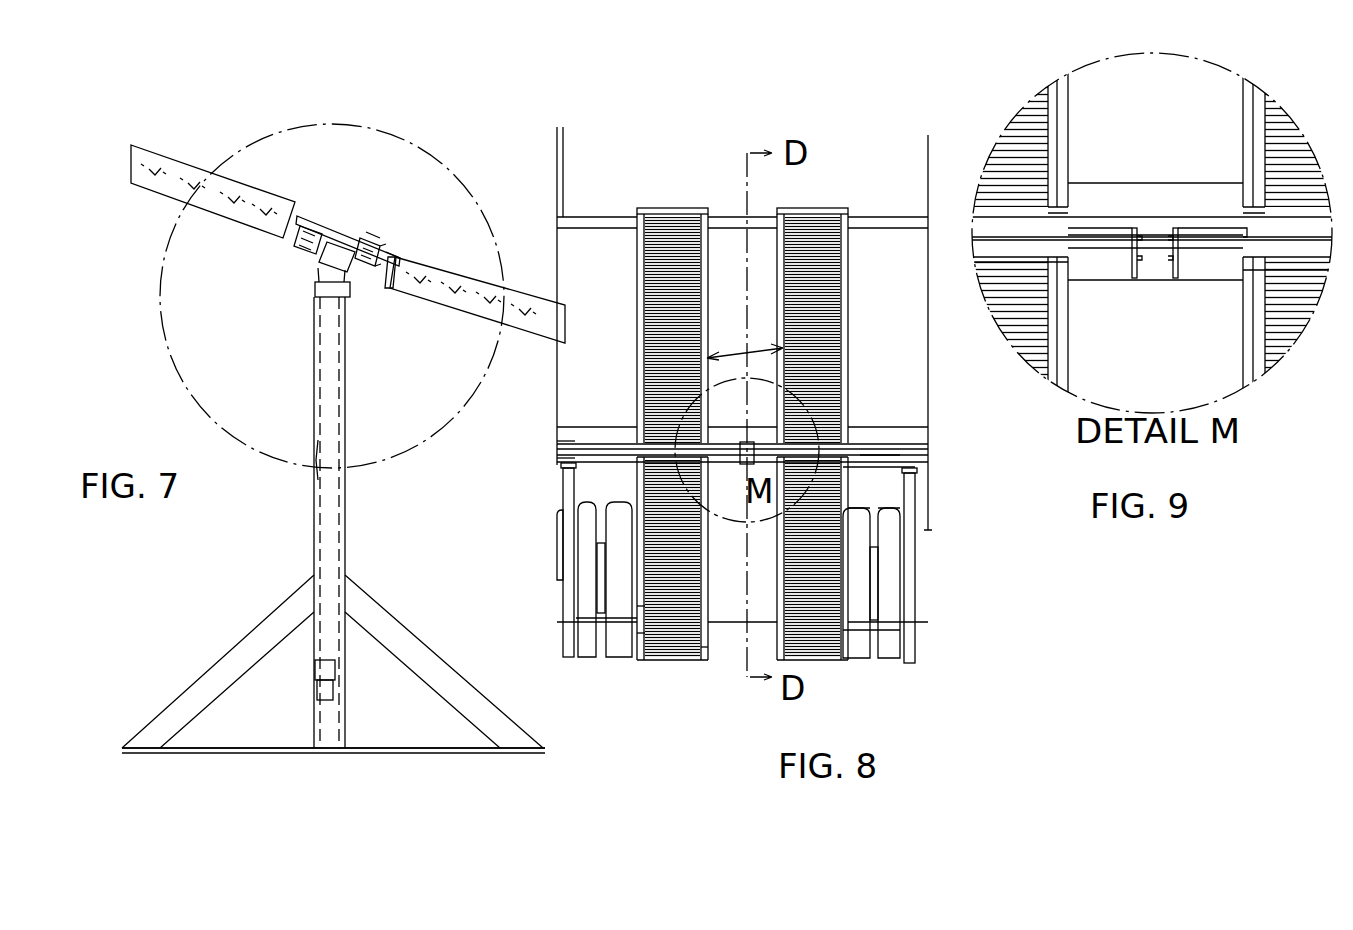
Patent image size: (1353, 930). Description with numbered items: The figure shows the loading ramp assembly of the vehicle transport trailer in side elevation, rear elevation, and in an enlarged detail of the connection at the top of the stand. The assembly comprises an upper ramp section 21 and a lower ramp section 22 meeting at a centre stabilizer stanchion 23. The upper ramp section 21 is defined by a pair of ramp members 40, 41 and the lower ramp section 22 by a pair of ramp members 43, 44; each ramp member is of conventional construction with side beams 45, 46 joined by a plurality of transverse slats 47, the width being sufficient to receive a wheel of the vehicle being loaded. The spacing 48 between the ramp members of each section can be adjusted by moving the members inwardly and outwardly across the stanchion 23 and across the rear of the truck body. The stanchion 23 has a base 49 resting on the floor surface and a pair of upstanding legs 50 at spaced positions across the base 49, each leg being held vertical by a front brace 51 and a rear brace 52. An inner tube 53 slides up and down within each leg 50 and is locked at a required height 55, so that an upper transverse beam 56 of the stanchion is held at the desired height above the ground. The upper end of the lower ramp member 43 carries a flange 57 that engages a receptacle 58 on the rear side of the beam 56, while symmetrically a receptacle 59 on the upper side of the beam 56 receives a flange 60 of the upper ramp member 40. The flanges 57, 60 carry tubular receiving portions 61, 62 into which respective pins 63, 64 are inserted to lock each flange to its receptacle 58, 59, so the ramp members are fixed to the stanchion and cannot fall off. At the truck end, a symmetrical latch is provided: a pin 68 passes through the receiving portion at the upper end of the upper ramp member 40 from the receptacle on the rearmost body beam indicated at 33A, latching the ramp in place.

In FIG. 8, the upper ramp section 21 is at (856, 357).
In FIG. 8, the lower ramp section 22 is at (852, 573).
In FIG. 7, the centre stabilizer stanchion 23 is at (360, 532).
In FIG. 8, the rear most beam 33A is at (578, 222).
In FIG. 7, the ramp member 40 is at (174, 176).
In FIG. 8, the ramp member 40 is at (648, 312).
In FIG. 8, the ramp member 41 is at (822, 302).
In FIG. 7, the ramp member 43 is at (463, 283).
In FIG. 8, the ramp member 43 is at (668, 647).
In FIG. 8, the ramp member 44 is at (823, 648).
In FIG. 8, the side beam 45 is at (637, 633).
In FIG. 8, the side beam 46 is at (707, 647).
In FIG. 8, the transverse slats 47 is at (637, 610).
In FIG. 8, the spacing 48 is at (727, 350).
In FIG. 7, the base 49 is at (373, 748).
In FIG. 7, the upstanding legs 50 is at (340, 498).
In FIG. 8, the upstanding legs 50 is at (558, 508).
In FIG. 7, the front brace 51 is at (253, 630).
In FIG. 7, the rear brace 52 is at (387, 640).
In FIG. 7, the inner tube 53 is at (349, 356).
In FIG. 7, the required height 55 is at (318, 440).
In FIG. 7, the upper transverse beam 56 is at (358, 243).
In FIG. 8, the upper transverse beam 56 is at (877, 462).
In FIG. 7, the flange 57 is at (366, 236).
In FIG. 7, the receptacle 58 is at (357, 255).
In FIG. 7, the receptacle 59 is at (304, 249).
In FIG. 7, the flange 60 is at (303, 225).
In FIG. 7, the tubular receiving portion 61 is at (391, 232).
In FIG. 7, the tubular receiving portion 62 is at (309, 232).
In FIG. 7, the pin 63 is at (392, 218).
In FIG. 8, the pin 63 is at (560, 458).
In FIG. 7, the pin 64 is at (372, 218).
In FIG. 8, the pin 64 is at (559, 446).
In FIG. 8, the pin 68 is at (628, 214).